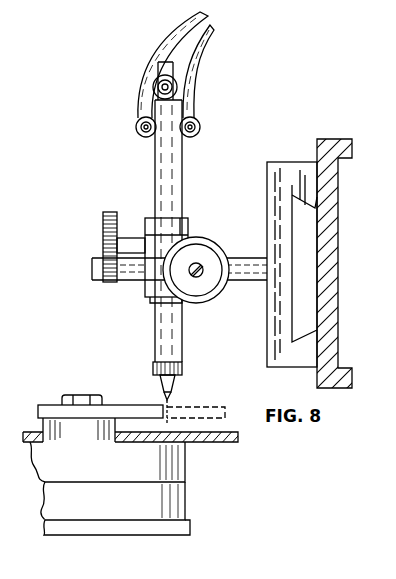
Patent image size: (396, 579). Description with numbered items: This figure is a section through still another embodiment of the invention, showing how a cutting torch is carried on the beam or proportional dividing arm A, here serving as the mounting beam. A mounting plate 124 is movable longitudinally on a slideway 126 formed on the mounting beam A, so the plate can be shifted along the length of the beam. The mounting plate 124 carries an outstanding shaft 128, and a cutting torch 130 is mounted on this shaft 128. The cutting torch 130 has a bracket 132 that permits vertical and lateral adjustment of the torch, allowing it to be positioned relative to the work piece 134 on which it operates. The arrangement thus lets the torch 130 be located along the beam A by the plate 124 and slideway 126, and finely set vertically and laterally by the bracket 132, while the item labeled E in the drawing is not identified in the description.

The mounting plate 124 is at (296, 195).
The slideway 126 is at (280, 237).
The outstanding shaft 128 is at (238, 267).
The cutting torch 130 is at (167, 184).
The bracket 132 is at (170, 227).
The work piece 134 is at (137, 412).
The proportional dividing arm A is at (339, 267).
The bolt head E is at (83, 392).